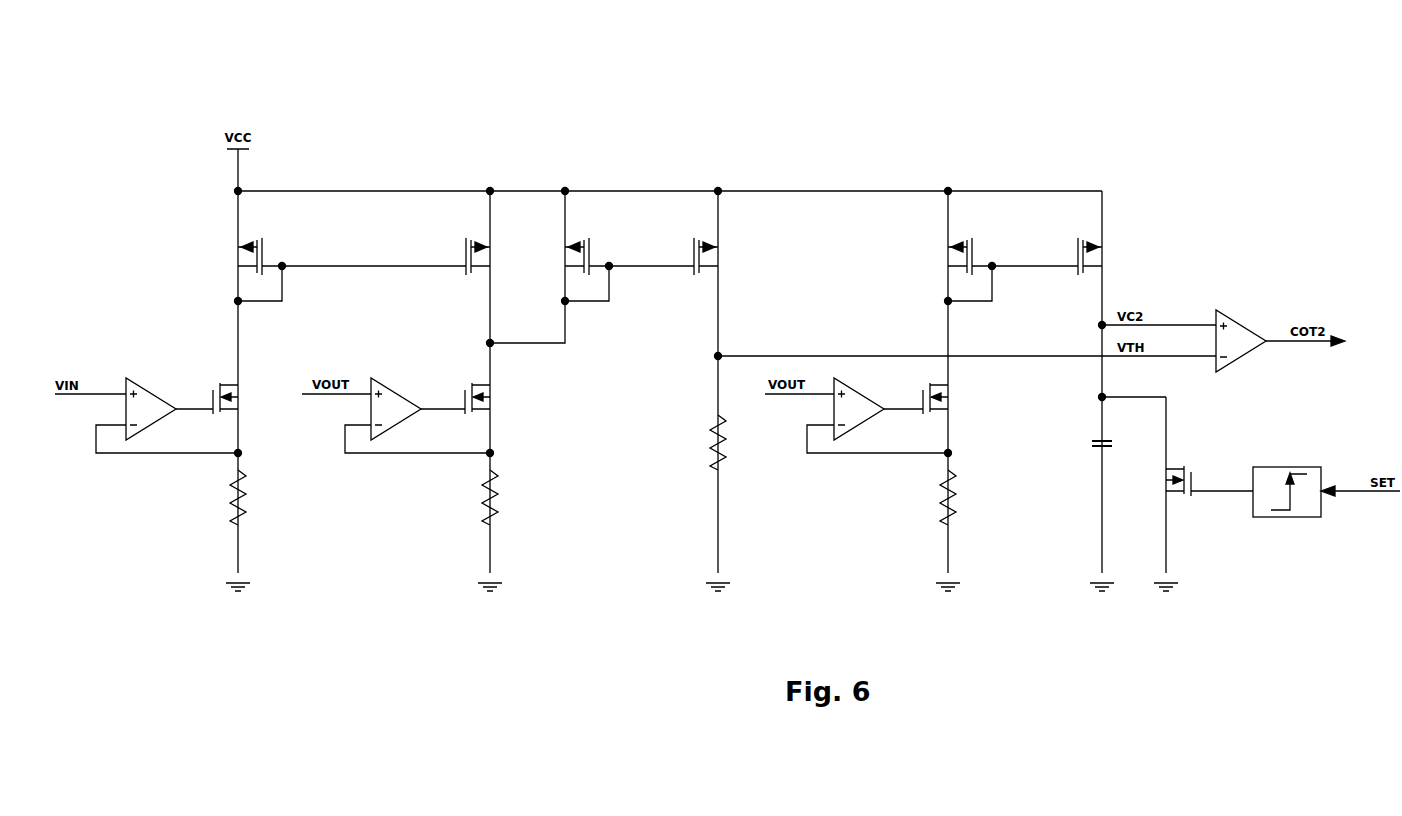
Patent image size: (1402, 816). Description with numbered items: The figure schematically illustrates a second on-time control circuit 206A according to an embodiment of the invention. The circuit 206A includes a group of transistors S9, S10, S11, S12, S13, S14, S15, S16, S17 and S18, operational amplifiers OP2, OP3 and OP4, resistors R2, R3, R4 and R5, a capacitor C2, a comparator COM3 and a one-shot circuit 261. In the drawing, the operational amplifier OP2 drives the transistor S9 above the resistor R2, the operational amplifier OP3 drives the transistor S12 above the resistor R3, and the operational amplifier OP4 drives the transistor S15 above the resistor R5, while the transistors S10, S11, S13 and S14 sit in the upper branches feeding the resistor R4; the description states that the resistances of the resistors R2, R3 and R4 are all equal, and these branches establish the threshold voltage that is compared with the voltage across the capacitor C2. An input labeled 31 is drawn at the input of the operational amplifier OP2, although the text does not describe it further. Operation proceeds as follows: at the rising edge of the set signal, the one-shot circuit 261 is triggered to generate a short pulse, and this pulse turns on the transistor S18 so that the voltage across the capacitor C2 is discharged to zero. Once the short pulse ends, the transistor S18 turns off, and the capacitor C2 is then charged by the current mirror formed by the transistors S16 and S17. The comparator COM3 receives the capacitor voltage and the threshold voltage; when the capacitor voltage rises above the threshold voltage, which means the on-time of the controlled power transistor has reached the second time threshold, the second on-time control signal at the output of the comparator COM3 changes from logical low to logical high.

The second on-time control circuit 206A is at (1241, 84).
The one-shot circuit 261 is at (1270, 517).
The input voltage terminal 31 is at (94, 374).
The transistor S9 is at (241, 398).
The transistor S10 is at (265, 271).
The transistor S11 is at (464, 256).
The transistor S12 is at (494, 398).
The transistor S13 is at (591, 271).
The transistor S14 is at (691, 256).
The transistor S15 is at (952, 398).
The transistor S16 is at (974, 271).
The transistor S17 is at (1076, 256).
The transistor S18 is at (1183, 491).
The resistor R2 is at (251, 497).
The resistor R3 is at (503, 497).
The resistor R4 is at (732, 442).
The resistor R5 is at (960, 497).
The capacitor C2 is at (1090, 444).
The operational amplifier OP2 is at (146, 415).
The operational amplifier OP3 is at (396, 415).
The operational amplifier OP4 is at (856, 415).
The comparator COM3 is at (1031, 341).